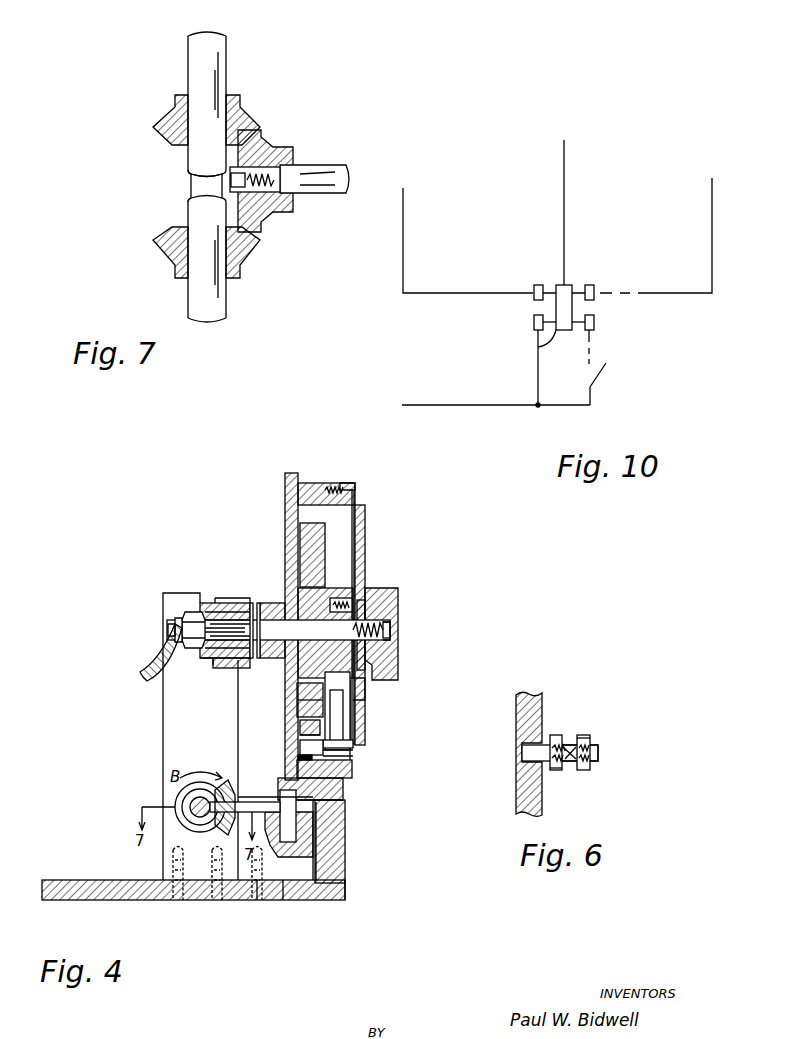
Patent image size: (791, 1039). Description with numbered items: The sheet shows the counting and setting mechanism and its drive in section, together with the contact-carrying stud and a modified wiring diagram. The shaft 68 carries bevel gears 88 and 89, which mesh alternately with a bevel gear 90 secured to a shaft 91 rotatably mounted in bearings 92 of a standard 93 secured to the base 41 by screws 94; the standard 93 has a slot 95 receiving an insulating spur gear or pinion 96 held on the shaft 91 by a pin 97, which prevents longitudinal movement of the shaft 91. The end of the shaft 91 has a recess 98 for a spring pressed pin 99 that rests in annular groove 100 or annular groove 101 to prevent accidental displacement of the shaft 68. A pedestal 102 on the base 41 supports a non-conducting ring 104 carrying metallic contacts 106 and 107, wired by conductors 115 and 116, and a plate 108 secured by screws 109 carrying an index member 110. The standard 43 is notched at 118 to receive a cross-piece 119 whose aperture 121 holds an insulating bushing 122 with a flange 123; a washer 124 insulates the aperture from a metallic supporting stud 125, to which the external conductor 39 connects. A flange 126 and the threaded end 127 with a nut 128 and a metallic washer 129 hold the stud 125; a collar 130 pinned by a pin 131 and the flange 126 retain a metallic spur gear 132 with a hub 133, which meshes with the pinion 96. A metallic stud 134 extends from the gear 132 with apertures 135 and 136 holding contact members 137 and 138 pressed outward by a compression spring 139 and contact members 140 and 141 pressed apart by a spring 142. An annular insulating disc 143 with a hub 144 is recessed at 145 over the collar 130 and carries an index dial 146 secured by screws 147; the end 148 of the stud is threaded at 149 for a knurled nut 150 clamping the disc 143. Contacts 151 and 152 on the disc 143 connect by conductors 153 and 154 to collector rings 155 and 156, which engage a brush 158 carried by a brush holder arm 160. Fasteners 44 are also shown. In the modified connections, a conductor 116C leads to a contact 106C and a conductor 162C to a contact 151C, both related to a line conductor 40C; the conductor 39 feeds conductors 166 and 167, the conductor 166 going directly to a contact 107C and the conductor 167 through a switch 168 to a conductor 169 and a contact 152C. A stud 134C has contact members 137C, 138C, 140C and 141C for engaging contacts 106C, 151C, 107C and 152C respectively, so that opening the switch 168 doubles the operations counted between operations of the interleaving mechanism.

In FIG. 7, the shaft 68 is at (187, 296).
In FIG. 4, the shaft 68 is at (194, 812).
In FIG. 7, the bevel gear 88 is at (162, 252).
In FIG. 7, the bevel gear 89 is at (240, 97).
In FIG. 7, the bevel gear 90 is at (264, 136).
In FIG. 4, the bevel gear 90 is at (220, 830).
In FIG. 7, the shaft 91 is at (310, 164).
In FIG. 4, the shaft 91 is at (240, 800).
In FIG. 7, the recess 98 is at (265, 212).
In FIG. 7, the spring pressed pin 99 is at (221, 180).
In FIG. 7, the annular groove 100 is at (190, 198).
In FIG. 7, the annular groove 101 is at (189, 173).
In FIG. 10, the line conductor 40C is at (564, 205).
In FIG. 10, the contact 106C is at (556, 288).
In FIG. 10, the contact 107C is at (534, 323).
In FIG. 10, the conductor 116C is at (480, 293).
In FIG. 10, the stud 134C is at (552, 335).
In FIG. 10, the contact member 137C is at (537, 284).
In FIG. 10, the contact member 138C is at (578, 284).
In FIG. 10, the contact member 140C is at (545, 320).
In FIG. 10, the contact member 141C is at (578, 322).
In FIG. 10, the contact 151C is at (588, 284).
In FIG. 10, the contact 152C is at (592, 328).
In FIG. 10, the conductor 162C is at (614, 293).
In FIG. 10, the conductor 166 is at (538, 370).
In FIG. 10, the conductor 167 is at (592, 395).
In FIG. 10, the switch 168 is at (604, 370).
In FIG. 10, the conductor 169 is at (592, 350).
In FIG. 10, the external conductor 39 is at (452, 406).
In FIG. 4, the external conductor 39 is at (150, 665).
In FIG. 6, the metallic spur gear 132 is at (515, 717).
In FIG. 4, the metallic spur gear 132 is at (284, 495).
In FIG. 6, the metallic stud 134 is at (596, 750).
In FIG. 4, the metallic stud 134 is at (335, 751).
In FIG. 6, the aperture 135 is at (560, 768).
In FIG. 6, the aperture 136 is at (596, 756).
In FIG. 6, the contact member 137 is at (553, 772).
In FIG. 6, the contact member 138 is at (553, 733).
In FIG. 6, the compression spring 139 is at (570, 744).
In FIG. 6, the contact member 140 is at (588, 770).
In FIG. 6, the contact member 141 is at (585, 734).
In FIG. 6, the spring 142 is at (590, 741).
In FIG. 4, the base 41 is at (82, 901).
In FIG. 4, the standard 43 is at (162, 775).
In FIG. 4, the bolts 44 is at (178, 903).
In FIG. 4, the bearings 92 is at (282, 796).
In FIG. 4, the standard 93 is at (282, 903).
In FIG. 4, the screws 94 is at (260, 903).
In FIG. 4, the slot 95 is at (345, 860).
In FIG. 4, the spur gear or pinion 96 is at (338, 840).
In FIG. 4, the pin 97 is at (340, 826).
In FIG. 4, the pedestal 102 is at (346, 878).
In FIG. 4, the ring 104 is at (306, 482).
In FIG. 4, the metallic contact 106 is at (297, 760).
In FIG. 4, the metallic contact 107 is at (335, 768).
In FIG. 4, the plate 108 is at (365, 525).
In FIG. 4, the screws 109 is at (356, 489).
In FIG. 4, the index member 110 is at (358, 505).
In FIG. 4, the conductor 115 is at (342, 797).
In FIG. 4, the conductor 116 is at (335, 786).
In FIG. 4, the notch 118 is at (235, 669).
In FIG. 4, the cross-piece 119 is at (228, 602).
In FIG. 4, the aperture 121 is at (214, 602).
In FIG. 4, the insulating bushing 122 is at (212, 662).
In FIG. 4, the flange 123 is at (251, 602).
In FIG. 4, the washer 124 is at (202, 608).
In FIG. 4, the metallic supporting stud 125 is at (276, 641).
In FIG. 4, the flange 126 is at (258, 602).
In FIG. 4, the end of the stud 127 is at (181, 624).
In FIG. 4, the nut 128 is at (178, 616).
In FIG. 4, the metallic washer 129 is at (195, 612).
In FIG. 4, the collar 130 is at (346, 607).
In FIG. 4, the pin 131 is at (330, 600).
In FIG. 4, the hub 133 is at (270, 602).
In FIG. 4, the annular insulating disc 143 is at (326, 560).
In FIG. 4, the hub 144 is at (363, 681).
In FIG. 4, the recess 145 is at (386, 632).
In FIG. 4, the index dial 146 is at (352, 695).
In FIG. 4, the screws 147 is at (361, 605).
In FIG. 4, the end of the supporting stud 148 is at (388, 625).
In FIG. 4, the threads 149 is at (389, 641).
In FIG. 4, the knurled nut 150 is at (396, 601).
In FIG. 4, the contact 151 is at (299, 752).
In FIG. 4, the contact 152 is at (354, 741).
In FIG. 4, the conductor 153 is at (299, 722).
In FIG. 4, the conductor 154 is at (299, 735).
In FIG. 4, the collector ring 155 is at (296, 692).
In FIG. 4, the collector ring 156 is at (297, 701).
In FIG. 4, the brush 158 is at (351, 706).
In FIG. 4, the brush holder arm 160 is at (338, 716).